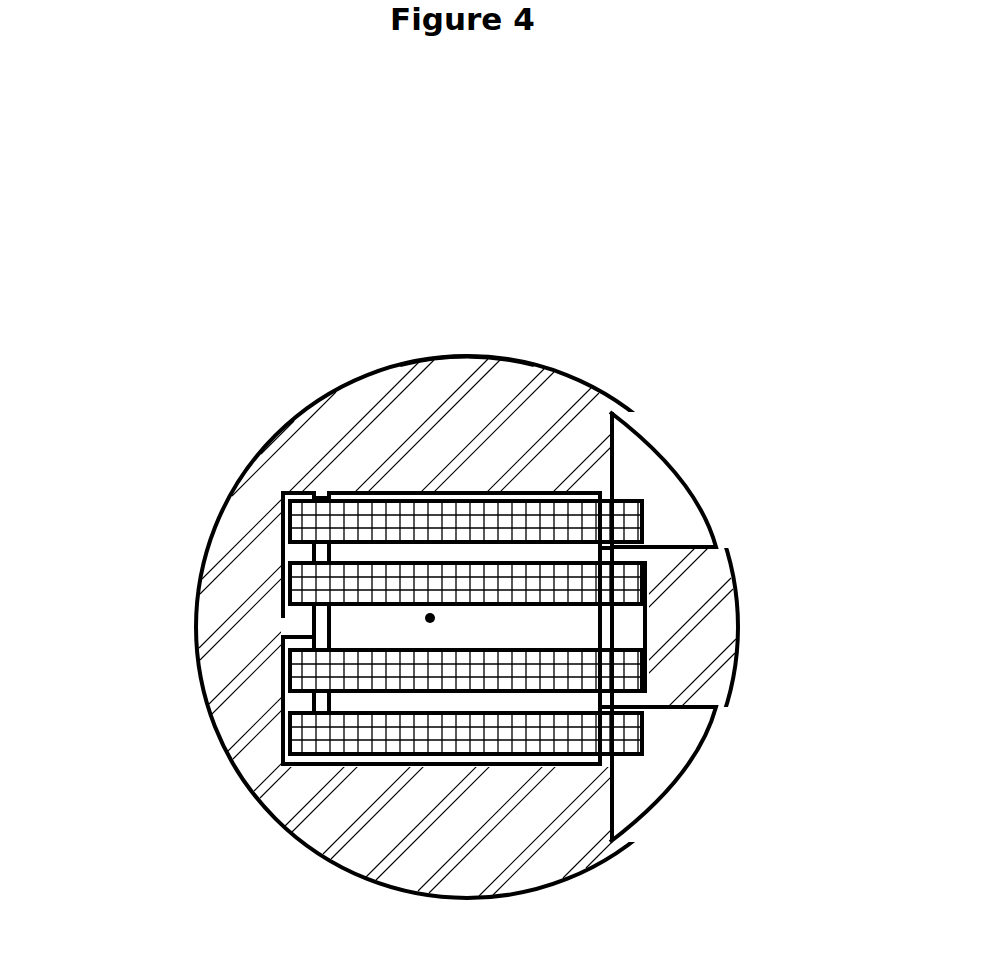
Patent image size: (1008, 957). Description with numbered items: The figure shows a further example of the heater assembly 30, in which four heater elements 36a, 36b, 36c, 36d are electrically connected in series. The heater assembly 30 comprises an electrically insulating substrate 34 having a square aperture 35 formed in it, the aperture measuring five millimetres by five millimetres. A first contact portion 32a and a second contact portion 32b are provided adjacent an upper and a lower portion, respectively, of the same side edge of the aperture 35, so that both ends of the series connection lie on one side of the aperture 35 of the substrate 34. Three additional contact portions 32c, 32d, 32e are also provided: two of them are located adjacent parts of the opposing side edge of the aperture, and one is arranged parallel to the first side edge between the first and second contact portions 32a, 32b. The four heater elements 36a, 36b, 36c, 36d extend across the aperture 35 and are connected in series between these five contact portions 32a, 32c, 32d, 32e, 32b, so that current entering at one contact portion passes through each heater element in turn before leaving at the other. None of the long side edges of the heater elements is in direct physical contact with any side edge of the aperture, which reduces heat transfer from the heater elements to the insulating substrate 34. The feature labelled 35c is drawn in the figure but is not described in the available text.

The heater assembly 30 is at (530, 236).
The first contact portion 32a is at (647, 462).
The second contact portion 32b is at (642, 800).
The additional contact portion 32c is at (618, 632).
The additional contact portion 32d is at (292, 760).
The additional contact portion 32e is at (285, 496).
The electrically insulating substrate 34 is at (547, 402).
The aperture 35 is at (428, 616).
The outer surface 35c is at (485, 350).
The heater element 36a is at (307, 515).
The heater element 36b is at (307, 585).
The heater element 36c is at (307, 668).
The heater element 36d is at (307, 734).